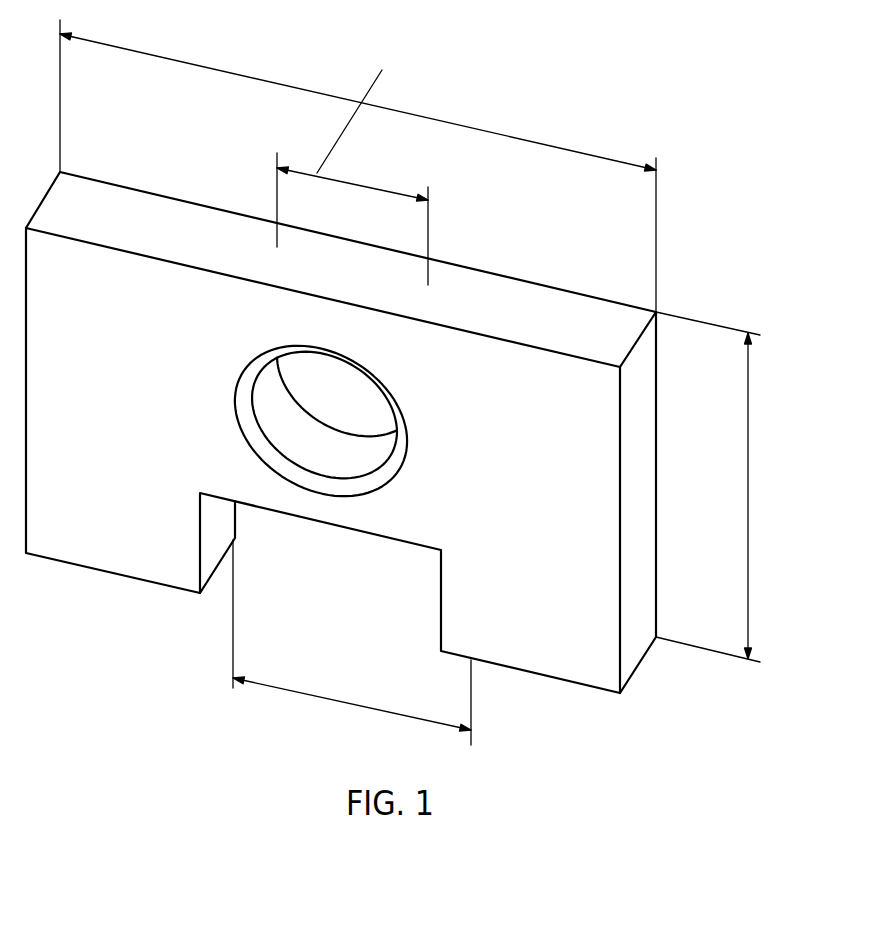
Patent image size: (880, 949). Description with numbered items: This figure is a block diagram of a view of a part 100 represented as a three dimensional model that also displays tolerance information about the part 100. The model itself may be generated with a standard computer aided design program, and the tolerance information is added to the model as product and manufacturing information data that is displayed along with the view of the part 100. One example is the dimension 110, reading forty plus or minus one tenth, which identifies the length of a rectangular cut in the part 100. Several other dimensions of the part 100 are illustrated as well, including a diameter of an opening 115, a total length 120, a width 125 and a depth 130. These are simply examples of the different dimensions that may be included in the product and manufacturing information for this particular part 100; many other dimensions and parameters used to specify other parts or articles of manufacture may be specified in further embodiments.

The part 100 is at (697, 69).
The dimension 110 is at (355, 707).
The diameter of an opening 115 is at (380, 188).
The total length 120 is at (472, 128).
The width 125 is at (750, 496).
The depth 130 is at (338, 140).